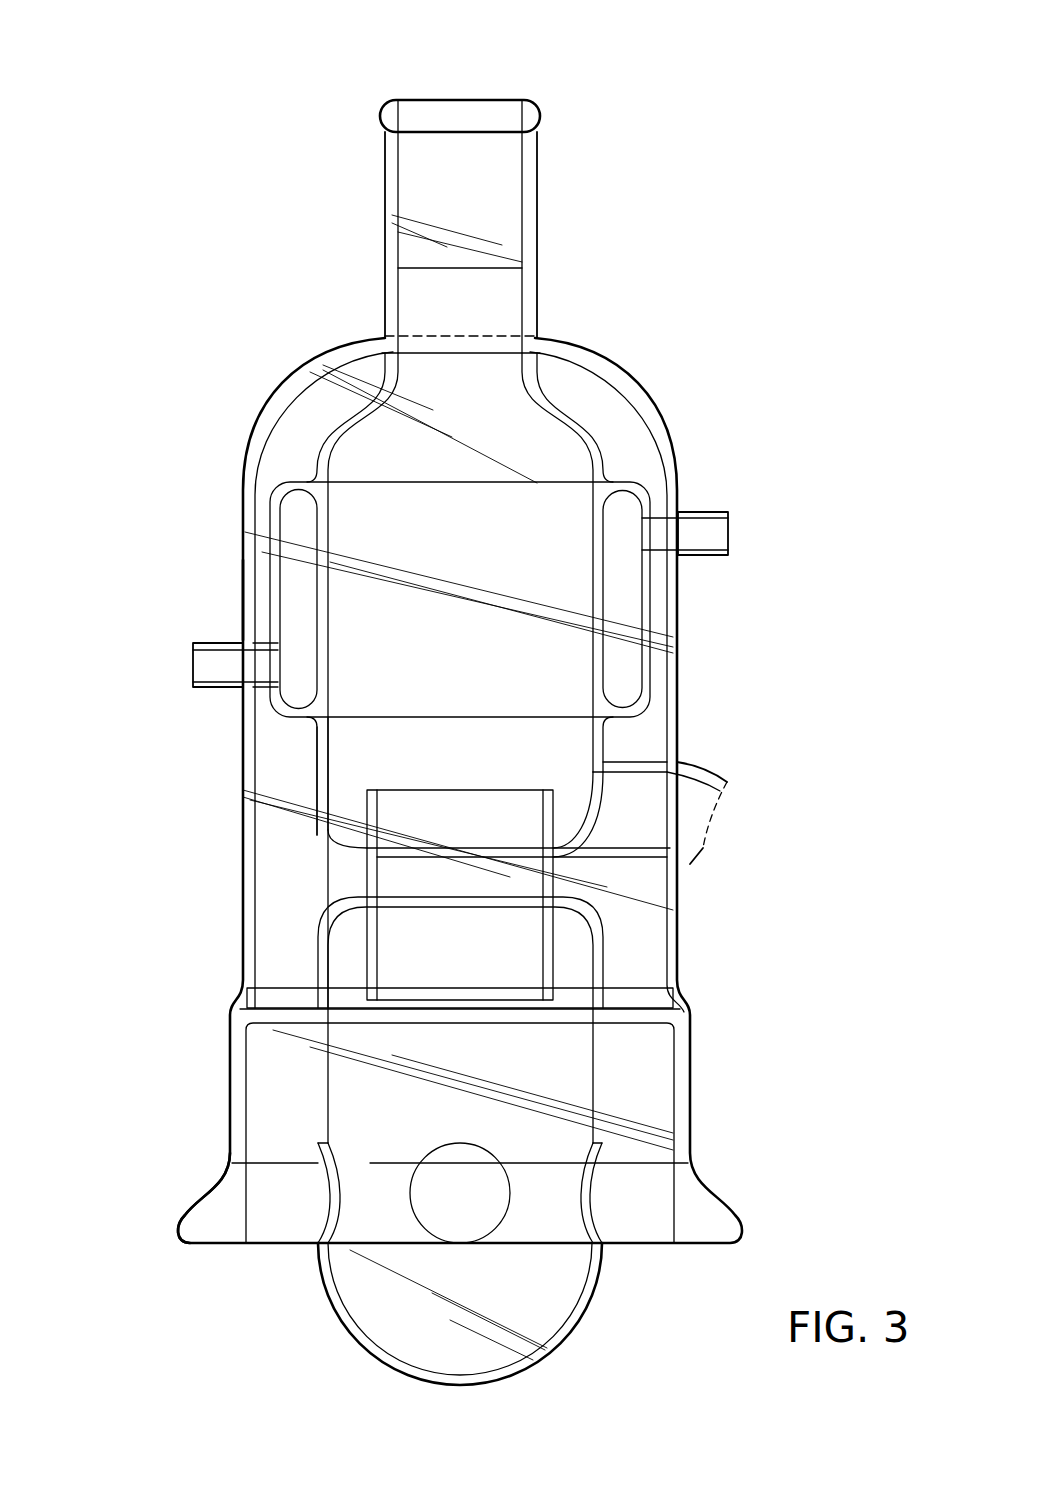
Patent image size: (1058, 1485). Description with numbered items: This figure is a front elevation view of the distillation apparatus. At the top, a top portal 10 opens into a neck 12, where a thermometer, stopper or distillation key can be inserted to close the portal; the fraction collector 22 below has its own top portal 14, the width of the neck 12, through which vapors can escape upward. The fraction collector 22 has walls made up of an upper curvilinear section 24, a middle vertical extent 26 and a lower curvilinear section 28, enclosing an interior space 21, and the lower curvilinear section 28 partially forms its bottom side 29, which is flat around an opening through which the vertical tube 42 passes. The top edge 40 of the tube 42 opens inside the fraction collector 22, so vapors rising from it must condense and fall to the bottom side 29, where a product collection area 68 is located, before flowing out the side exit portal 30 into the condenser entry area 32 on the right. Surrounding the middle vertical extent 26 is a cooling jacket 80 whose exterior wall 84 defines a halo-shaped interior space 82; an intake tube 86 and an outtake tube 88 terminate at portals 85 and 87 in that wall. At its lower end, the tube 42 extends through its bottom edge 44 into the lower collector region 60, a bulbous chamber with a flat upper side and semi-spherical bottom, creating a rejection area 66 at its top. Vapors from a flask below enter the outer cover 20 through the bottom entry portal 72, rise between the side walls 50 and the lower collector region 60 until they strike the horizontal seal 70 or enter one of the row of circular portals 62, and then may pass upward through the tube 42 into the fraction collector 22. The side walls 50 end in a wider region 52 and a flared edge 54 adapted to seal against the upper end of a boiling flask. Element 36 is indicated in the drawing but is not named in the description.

The top portal 10 is at (505, 116).
The neck 12 is at (505, 193).
The top portal 14 is at (505, 270).
The outer cover 20 is at (605, 398).
The interior space 21 is at (375, 578).
The fraction collector 22 is at (397, 497).
The upper curvilinear section 24 is at (605, 453).
The middle vertical extent 26 is at (598, 597).
The lower curvilinear section 28 is at (320, 805).
The bottom side 29 is at (527, 855).
The side exit portal 30 is at (598, 793).
The condenser entry area 32 is at (707, 773).
The outlet end 36 is at (703, 848).
The top edge 40 is at (402, 790).
The tube 42 is at (372, 883).
The bottom edge 44 is at (397, 998).
The side walls 50 is at (247, 597).
The wider region 52 is at (230, 1080).
The flared edge 54 is at (185, 1220).
The lower collector region 60 is at (367, 1313).
The portals 62 is at (487, 1208).
The rejection area 66 is at (578, 952).
The product collection area 68 is at (353, 831).
The horizontal seal 70 is at (648, 1015).
The bottom entry portal 72 is at (282, 1243).
The cooling jacket 80 is at (640, 492).
The interior space 82 is at (290, 513).
The exterior wall 84 is at (272, 540).
The intake portal 85 is at (277, 667).
The intake tube 86 is at (215, 663).
The outtake portal 87 is at (645, 527).
The outtake tube 88 is at (713, 537).